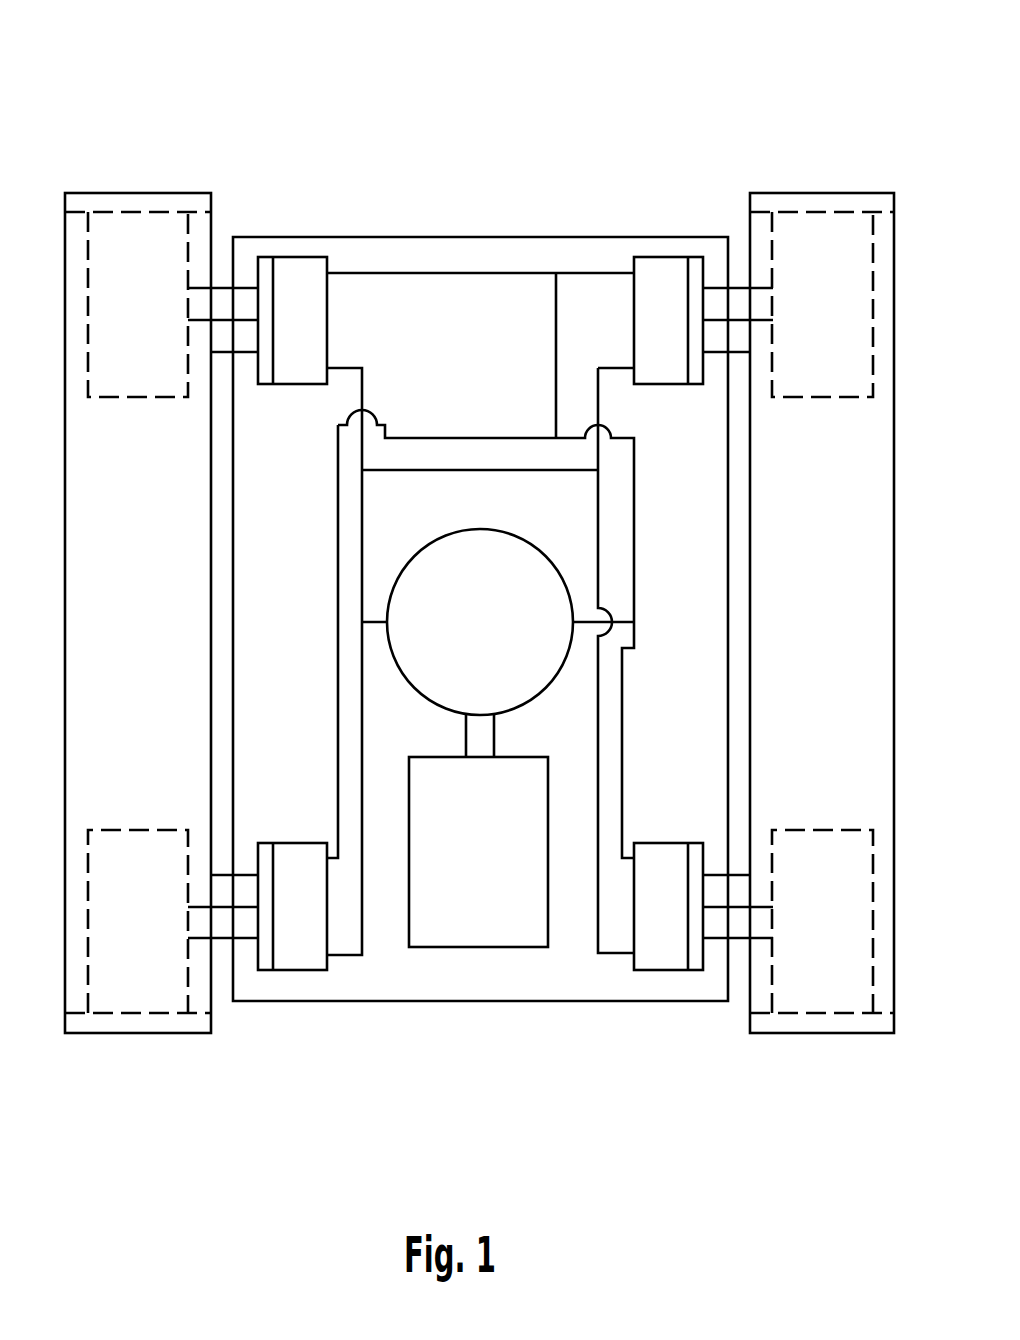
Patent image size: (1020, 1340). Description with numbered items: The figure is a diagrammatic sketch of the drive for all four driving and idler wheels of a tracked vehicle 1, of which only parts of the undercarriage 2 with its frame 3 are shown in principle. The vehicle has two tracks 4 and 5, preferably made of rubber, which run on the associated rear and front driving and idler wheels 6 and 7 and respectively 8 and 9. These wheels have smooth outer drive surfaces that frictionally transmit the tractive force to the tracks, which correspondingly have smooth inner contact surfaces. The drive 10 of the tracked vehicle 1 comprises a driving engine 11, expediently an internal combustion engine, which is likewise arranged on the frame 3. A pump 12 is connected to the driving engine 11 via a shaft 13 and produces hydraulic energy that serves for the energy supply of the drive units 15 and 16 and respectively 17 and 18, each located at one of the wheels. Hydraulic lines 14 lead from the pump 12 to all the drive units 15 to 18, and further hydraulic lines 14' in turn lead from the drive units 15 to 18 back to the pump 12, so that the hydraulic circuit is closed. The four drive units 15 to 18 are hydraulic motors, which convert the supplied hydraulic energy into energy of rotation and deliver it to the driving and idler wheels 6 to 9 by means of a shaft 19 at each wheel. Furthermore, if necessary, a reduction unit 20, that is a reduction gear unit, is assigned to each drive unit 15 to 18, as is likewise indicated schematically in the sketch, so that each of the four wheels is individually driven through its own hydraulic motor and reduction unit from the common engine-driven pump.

The tracked vehicle 1 is at (265, 106).
The undercarriage 2 is at (470, 218).
The frame 3 is at (405, 241).
The track 4 is at (117, 191).
The track 5 is at (847, 189).
The driving and idler wheel 6 is at (165, 228).
The driving and idler wheel 7 is at (798, 227).
The driving and idler wheel 8 is at (162, 998).
The driving and idler wheel 9 is at (793, 998).
The drive 10 is at (446, 966).
The driving engine 11 is at (503, 927).
The pump 12 is at (520, 560).
The shaft 13 is at (480, 733).
The hydraulic lines 14 is at (392, 661).
The hydraulic lines 14' is at (655, 660).
The drive unit 15 is at (297, 268).
The drive unit 16 is at (665, 268).
The drive unit 17 is at (295, 957).
The drive unit 18 is at (660, 957).
The shaft 19 is at (198, 298).
The reduction unit 20 is at (267, 373).